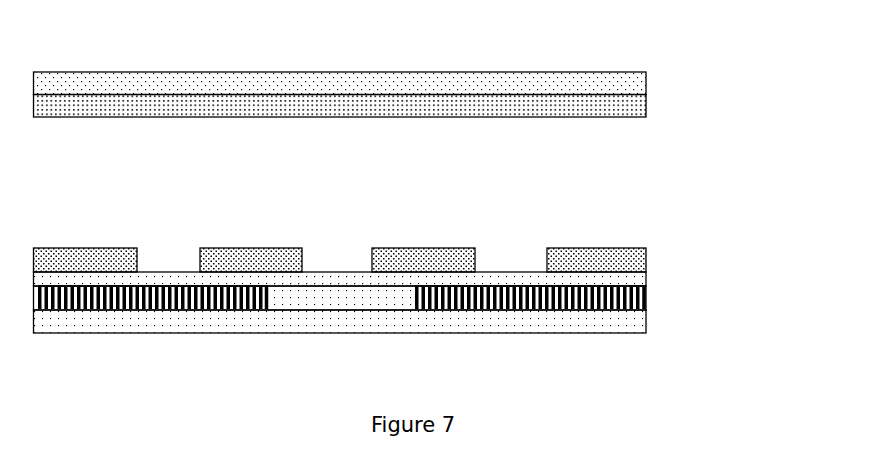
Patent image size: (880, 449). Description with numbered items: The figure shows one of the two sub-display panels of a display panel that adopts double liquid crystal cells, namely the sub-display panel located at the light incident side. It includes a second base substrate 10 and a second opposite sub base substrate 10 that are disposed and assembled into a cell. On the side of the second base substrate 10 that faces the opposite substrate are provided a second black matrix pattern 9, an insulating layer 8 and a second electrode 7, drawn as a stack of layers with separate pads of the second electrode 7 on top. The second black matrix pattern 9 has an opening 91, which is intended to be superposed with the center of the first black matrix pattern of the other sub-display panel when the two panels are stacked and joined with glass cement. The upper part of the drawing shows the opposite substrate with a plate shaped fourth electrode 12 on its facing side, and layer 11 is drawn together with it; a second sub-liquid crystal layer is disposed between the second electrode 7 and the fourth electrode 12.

The second electrode 7 is at (646, 257).
The insulating layer 8 is at (646, 282).
The second black matrix pattern 9 is at (646, 298).
The opening 91 is at (363, 302).
The second base substrate 10 is at (646, 320).
The upper cover layer 11 is at (646, 82).
The fourth electrode 12 is at (646, 103).